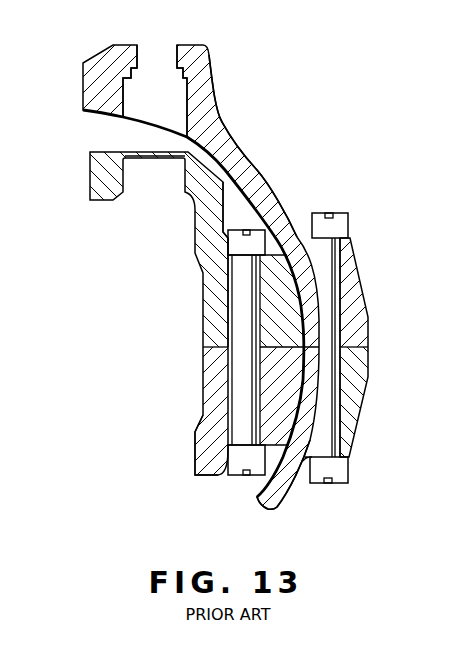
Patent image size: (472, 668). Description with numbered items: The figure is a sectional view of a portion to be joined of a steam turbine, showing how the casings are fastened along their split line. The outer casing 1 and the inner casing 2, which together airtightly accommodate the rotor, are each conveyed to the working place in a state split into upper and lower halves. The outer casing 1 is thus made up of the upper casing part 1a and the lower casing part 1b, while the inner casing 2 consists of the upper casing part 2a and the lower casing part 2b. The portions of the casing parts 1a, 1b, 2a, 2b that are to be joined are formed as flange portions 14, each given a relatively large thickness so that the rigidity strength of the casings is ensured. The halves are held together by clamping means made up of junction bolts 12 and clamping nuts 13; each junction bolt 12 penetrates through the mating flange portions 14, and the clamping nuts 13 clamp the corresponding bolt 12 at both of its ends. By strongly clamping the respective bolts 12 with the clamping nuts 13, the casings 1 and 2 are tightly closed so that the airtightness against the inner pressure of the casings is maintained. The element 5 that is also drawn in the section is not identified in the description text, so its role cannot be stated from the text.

The outer casing 1 is at (204, 269).
The upper casing part of outer casing 1a is at (243, 153).
The lower casing part of outer casing 1b is at (279, 503).
The inner casing 2 is at (208, 312).
The upper casing part of inner casing 2a is at (223, 223).
The lower casing part of inner casing 2b is at (195, 445).
The annular groove 5 is at (151, 58).
The junction bolt 12 is at (241, 303).
The clamping nut 13 is at (236, 243).
The flange portion 14 is at (368, 317).